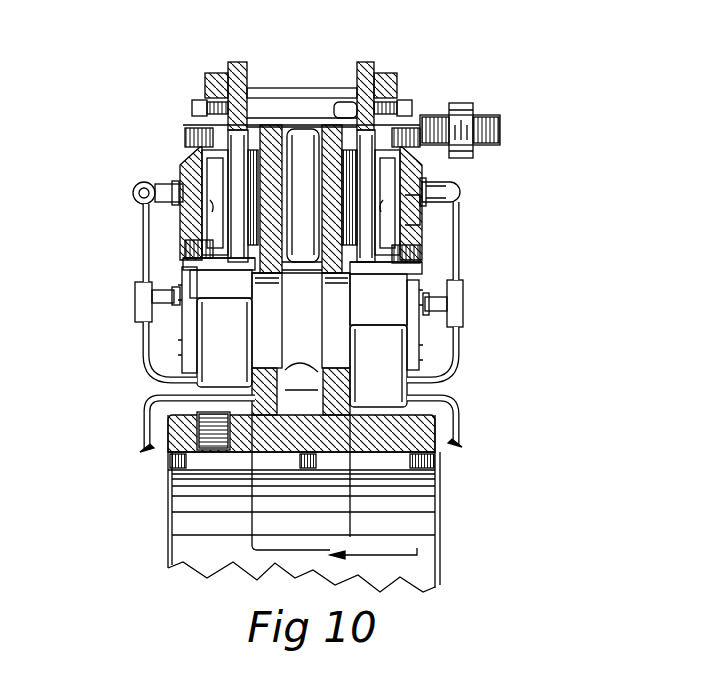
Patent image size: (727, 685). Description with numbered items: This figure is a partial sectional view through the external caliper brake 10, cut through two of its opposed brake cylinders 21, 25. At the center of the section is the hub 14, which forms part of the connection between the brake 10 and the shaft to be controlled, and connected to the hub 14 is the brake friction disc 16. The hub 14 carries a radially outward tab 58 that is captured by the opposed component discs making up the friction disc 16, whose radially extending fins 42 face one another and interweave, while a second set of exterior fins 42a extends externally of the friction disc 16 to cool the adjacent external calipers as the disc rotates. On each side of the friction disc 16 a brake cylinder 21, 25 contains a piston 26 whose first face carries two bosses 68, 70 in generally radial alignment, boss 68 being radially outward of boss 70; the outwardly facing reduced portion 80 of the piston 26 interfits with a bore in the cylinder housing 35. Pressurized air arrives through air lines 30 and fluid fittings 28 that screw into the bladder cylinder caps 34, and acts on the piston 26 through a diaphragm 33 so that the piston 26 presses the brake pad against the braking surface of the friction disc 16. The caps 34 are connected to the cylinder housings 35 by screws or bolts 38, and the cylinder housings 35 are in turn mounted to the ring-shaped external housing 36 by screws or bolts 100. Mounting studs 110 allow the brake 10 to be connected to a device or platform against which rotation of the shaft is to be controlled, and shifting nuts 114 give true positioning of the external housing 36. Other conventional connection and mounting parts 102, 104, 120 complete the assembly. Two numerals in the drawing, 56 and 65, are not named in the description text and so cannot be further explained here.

The external caliper brake 10 is at (100, 80).
The hub 14 is at (437, 440).
The brake friction disc 16 is at (417, 553).
The brake cylinder 21 is at (128, 135).
The brake cylinder 25 is at (485, 197).
The piston 26 is at (440, 181).
The fluid fitting 28 is at (133, 193).
The fluid connection or air line 30 is at (142, 238).
The diaphragm 33 is at (205, 176).
The bladder cylinder cap 34 is at (195, 160).
The cylinder housing 35 is at (208, 74).
The external housing 36 is at (232, 64).
The screw or bolt 38 is at (185, 138).
The fin 42 is at (301, 270).
The exterior fin 42a is at (193, 328).
The passage 56 is at (325, 372).
The tab 58 is at (295, 388).
The chamber 65 is at (422, 212).
The boss 68 is at (334, 140).
The boss 70 is at (205, 262).
The reduced portion 80 is at (215, 200).
The screw or bolt 100 is at (192, 108).
The connection or mounting part 102 is at (440, 468).
The connection or mounting part 104 is at (205, 455).
The mounting stud 110 is at (500, 128).
The shifting nut 114 is at (340, 104).
The connection or mounting part 120 is at (267, 95).